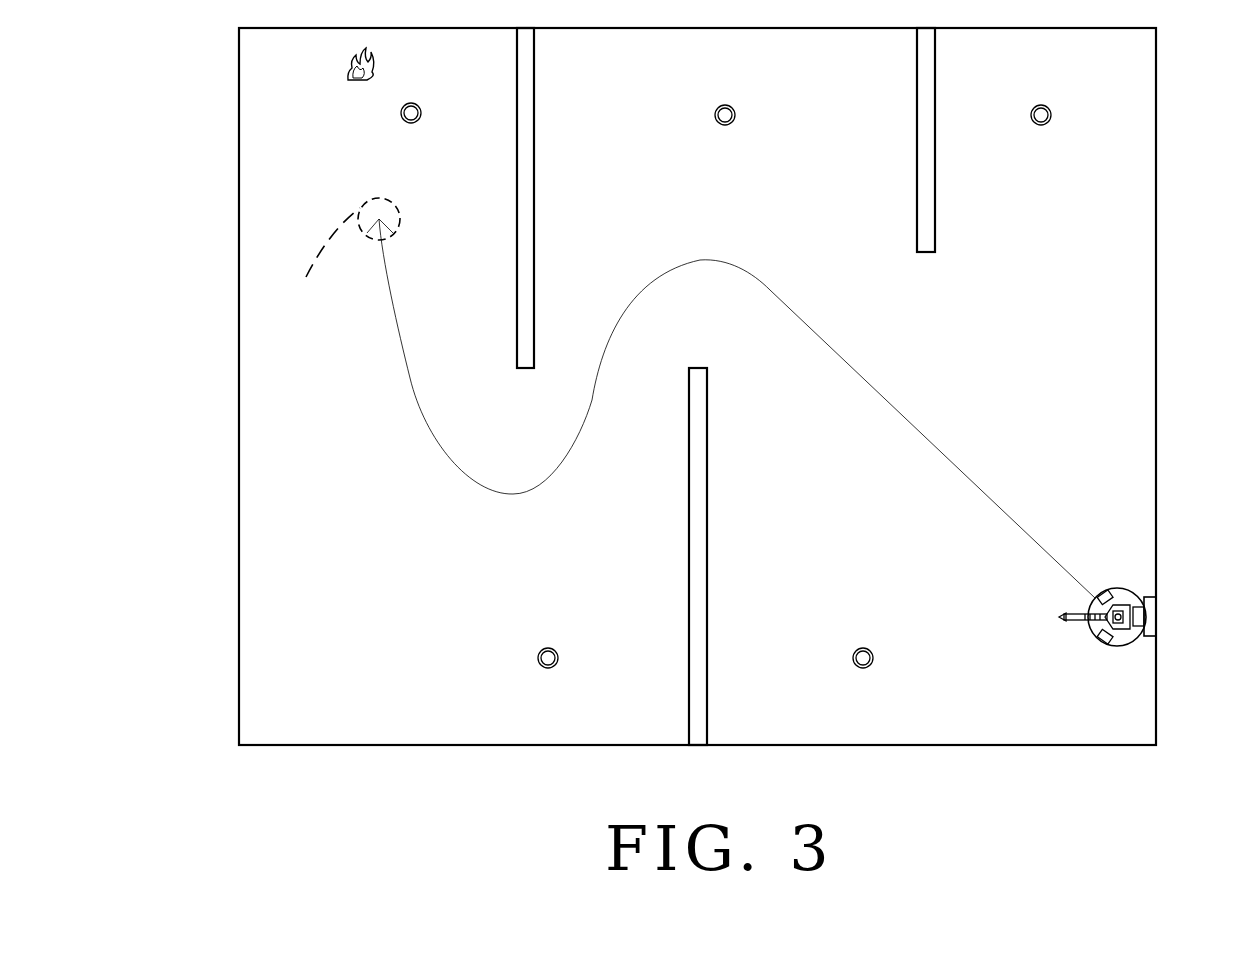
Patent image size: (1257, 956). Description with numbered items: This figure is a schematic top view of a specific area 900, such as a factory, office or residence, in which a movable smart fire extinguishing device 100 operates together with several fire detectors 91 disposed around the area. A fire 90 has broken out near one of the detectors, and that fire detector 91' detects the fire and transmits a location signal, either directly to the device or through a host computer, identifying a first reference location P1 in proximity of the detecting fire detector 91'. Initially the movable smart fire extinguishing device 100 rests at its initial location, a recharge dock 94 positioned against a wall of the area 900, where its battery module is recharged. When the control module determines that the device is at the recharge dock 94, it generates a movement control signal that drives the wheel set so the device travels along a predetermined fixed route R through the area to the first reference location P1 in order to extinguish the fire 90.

The specific area 900 is at (283, 223).
The fire 90 is at (345, 68).
The fire detectors 91 is at (789, 359).
The fire detector 91' is at (443, 139).
The first reference location P1 is at (353, 279).
The predetermined fixed route R is at (973, 477).
The movable smart fire extinguishing device 100 is at (1118, 587).
The recharge dock 94 is at (1150, 618).